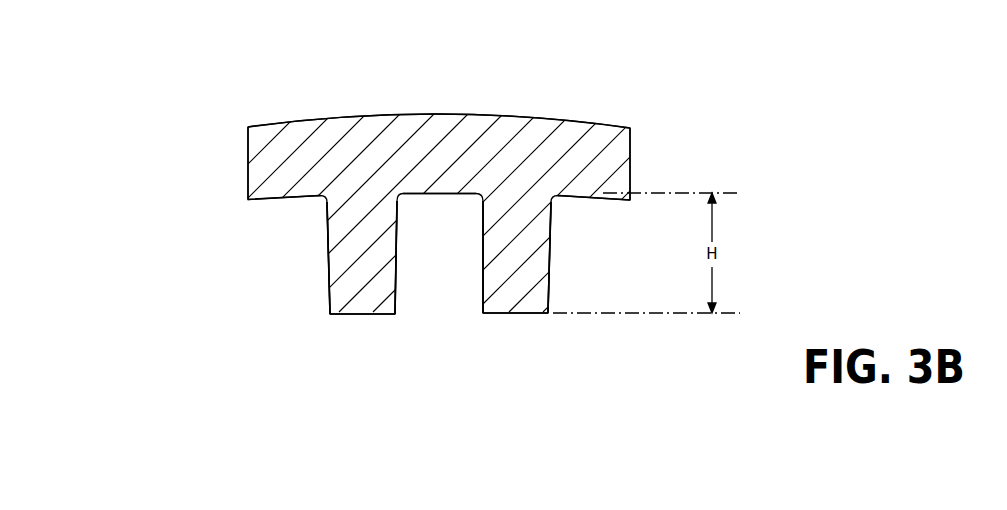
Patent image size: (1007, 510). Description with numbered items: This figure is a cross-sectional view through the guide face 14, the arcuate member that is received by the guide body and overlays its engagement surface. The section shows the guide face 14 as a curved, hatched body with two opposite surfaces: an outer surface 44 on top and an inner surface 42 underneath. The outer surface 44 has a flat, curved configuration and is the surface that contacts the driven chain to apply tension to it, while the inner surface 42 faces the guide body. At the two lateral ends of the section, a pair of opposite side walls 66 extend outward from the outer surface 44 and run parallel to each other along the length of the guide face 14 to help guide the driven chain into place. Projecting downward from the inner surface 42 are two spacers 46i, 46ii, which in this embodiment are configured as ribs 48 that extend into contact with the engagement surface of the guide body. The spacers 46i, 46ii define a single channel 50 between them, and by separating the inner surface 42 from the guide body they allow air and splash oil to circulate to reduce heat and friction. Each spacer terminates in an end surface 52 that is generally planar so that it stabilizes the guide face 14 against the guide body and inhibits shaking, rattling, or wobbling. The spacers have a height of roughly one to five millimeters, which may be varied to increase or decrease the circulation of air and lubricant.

The guide face 14 is at (665, 118).
The outer surface 44 is at (452, 114).
The side walls 66 is at (247, 152).
The inner surface 42 is at (279, 199).
The ribs 48 is at (335, 232).
The first spacer 46i is at (304, 294).
The second spacer 46ii is at (555, 290).
The channel 50 is at (448, 300).
The end surface 52 is at (357, 307).